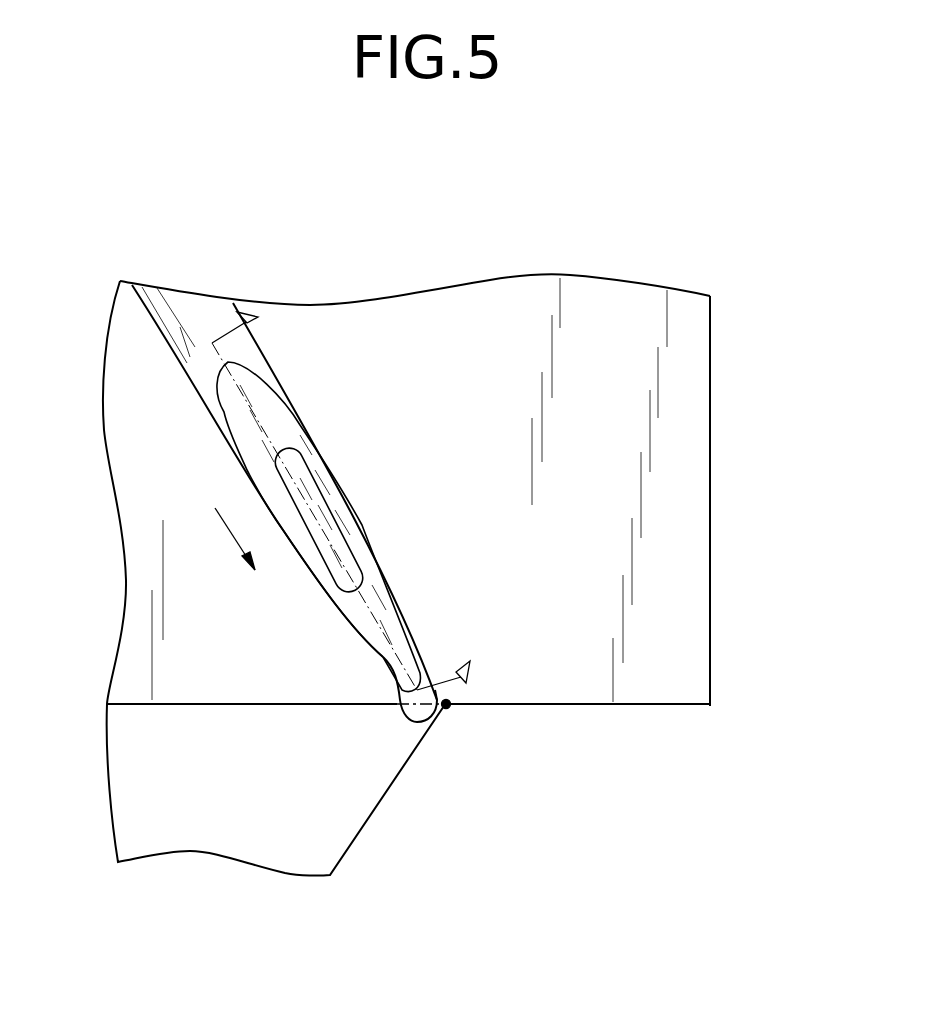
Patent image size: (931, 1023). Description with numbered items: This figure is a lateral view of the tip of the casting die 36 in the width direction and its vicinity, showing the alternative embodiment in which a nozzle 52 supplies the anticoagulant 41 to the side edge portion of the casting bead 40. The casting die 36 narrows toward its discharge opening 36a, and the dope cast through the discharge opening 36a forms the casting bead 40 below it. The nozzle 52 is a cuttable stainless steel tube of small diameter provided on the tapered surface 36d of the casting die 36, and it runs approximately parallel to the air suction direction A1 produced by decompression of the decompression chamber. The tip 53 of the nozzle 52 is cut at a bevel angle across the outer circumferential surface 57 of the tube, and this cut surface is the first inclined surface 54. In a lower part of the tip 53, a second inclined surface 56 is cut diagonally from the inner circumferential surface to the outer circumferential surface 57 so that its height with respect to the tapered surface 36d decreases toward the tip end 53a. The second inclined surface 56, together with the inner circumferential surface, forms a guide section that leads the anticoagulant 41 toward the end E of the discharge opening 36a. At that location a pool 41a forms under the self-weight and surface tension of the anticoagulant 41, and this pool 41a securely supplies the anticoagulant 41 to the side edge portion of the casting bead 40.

The casting die 36 is at (741, 467).
The discharge opening 36a is at (232, 703).
The tapered surface 36d is at (698, 593).
The casting bead 40 is at (353, 823).
The anticoagulant 41 is at (444, 677).
The pool 41a is at (423, 715).
The nozzle 52 is at (319, 489).
The tip 53 is at (373, 501).
The tip end 53a is at (403, 600).
The first inclined surface 54 is at (300, 413).
The second inclined surface 56 is at (347, 550).
The outer circumferential surface 57 is at (197, 373).
The air suction direction A1 is at (228, 540).
The end of the discharge opening E is at (450, 701).